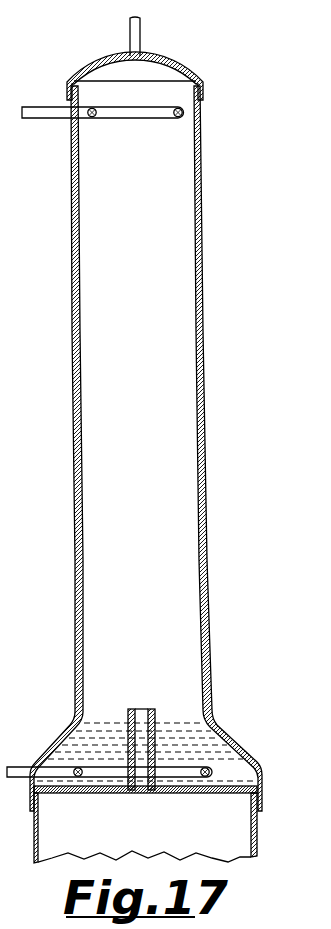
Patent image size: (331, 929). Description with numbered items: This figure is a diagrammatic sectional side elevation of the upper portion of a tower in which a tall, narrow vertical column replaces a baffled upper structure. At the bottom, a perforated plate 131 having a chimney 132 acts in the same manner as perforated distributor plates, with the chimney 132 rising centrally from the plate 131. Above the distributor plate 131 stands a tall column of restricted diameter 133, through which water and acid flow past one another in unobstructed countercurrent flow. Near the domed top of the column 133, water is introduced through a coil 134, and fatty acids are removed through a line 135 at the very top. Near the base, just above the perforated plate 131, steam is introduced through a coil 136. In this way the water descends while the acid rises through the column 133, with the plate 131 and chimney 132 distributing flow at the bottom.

The perforated plate 131 is at (184, 797).
The chimney 132 is at (157, 757).
The tall column of restricted diameter 133 is at (203, 338).
The coil 134 is at (184, 117).
The line 135 is at (141, 39).
The coil 136 is at (107, 748).